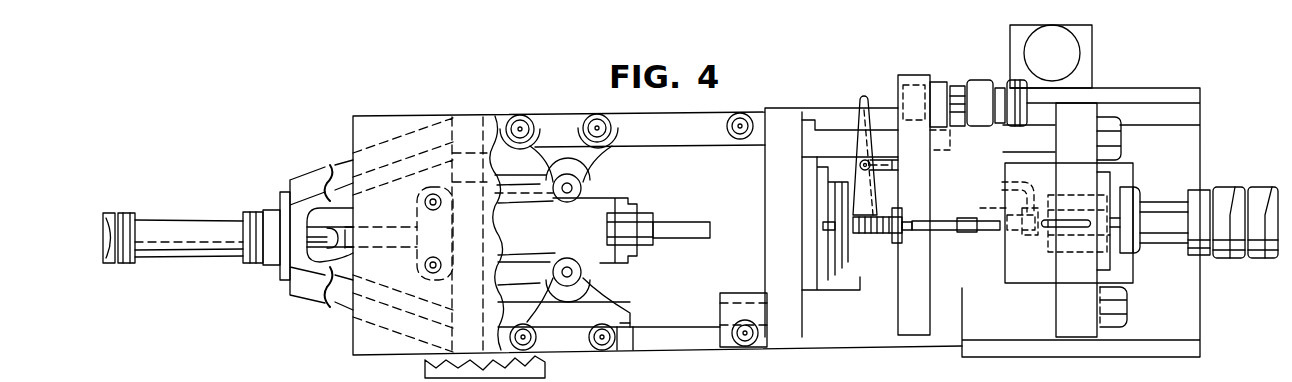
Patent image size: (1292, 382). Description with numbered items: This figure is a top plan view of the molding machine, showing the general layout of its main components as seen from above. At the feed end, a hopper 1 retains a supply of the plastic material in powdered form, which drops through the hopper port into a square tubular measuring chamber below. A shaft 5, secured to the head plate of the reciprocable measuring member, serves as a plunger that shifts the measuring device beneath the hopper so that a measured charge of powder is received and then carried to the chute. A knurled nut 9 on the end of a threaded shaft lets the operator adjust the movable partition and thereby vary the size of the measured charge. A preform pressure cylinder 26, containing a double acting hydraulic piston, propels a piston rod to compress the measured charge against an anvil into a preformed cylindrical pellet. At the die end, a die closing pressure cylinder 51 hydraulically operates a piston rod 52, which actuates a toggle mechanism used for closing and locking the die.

The hopper 1 is at (1128, 268).
The shaft 5 is at (985, 230).
The knurled nut 9 is at (1145, 226).
The preform pressure cylinder 26 is at (1180, 195).
The die closing pressure cylinder 51 is at (175, 258).
The piston rod 52 is at (362, 258).